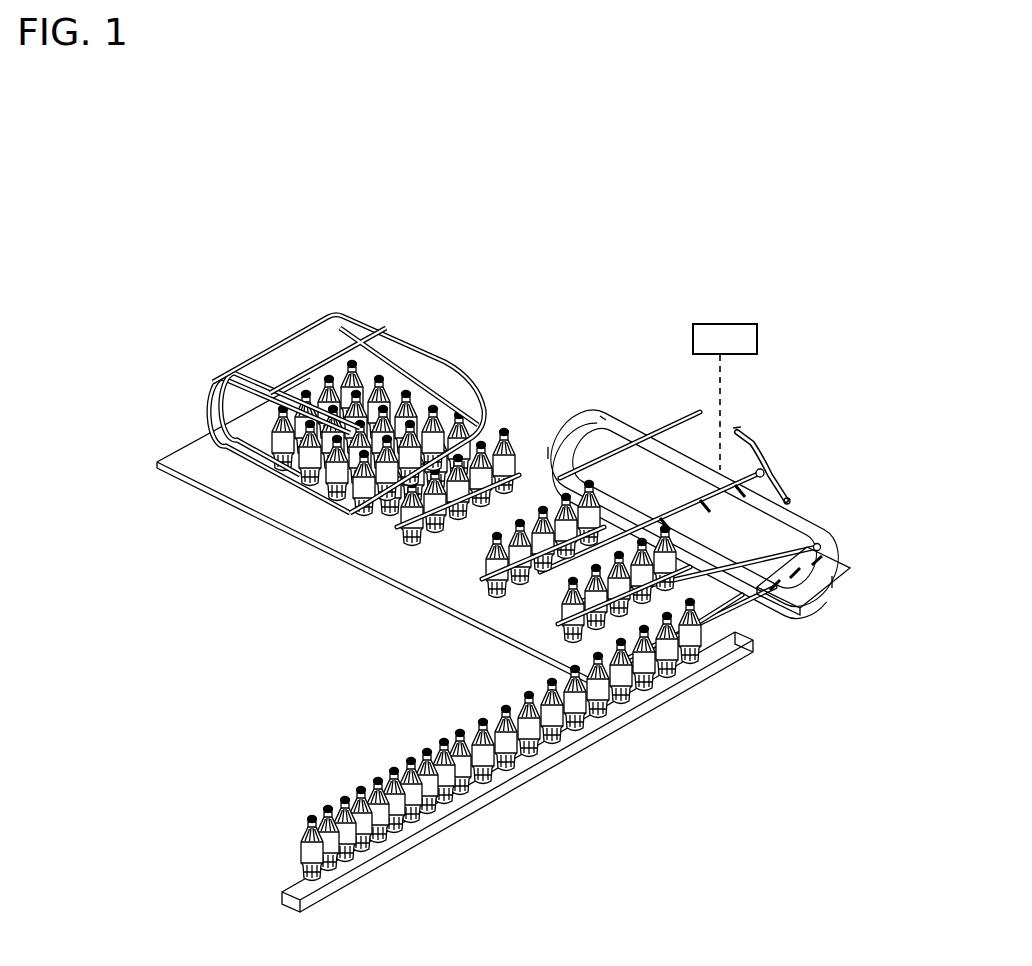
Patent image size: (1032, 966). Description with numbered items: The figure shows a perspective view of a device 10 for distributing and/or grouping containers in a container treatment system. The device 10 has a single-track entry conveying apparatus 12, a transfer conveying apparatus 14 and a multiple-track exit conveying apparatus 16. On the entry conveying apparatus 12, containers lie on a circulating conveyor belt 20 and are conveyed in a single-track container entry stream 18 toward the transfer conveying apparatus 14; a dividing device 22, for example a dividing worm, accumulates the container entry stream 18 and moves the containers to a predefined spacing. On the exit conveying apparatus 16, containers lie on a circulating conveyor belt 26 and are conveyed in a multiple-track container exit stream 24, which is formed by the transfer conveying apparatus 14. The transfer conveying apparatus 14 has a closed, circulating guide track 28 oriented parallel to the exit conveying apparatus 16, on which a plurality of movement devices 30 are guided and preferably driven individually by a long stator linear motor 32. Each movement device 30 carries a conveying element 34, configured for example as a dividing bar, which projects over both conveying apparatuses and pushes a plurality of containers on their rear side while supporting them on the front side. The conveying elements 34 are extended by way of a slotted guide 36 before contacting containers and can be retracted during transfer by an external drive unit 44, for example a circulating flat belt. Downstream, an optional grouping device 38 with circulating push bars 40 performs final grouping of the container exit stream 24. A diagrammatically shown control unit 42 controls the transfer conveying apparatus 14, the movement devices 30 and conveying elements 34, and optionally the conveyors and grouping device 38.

The device 10 is at (496, 182).
The entry conveying apparatus 12 is at (517, 780).
The transfer conveying apparatus 14 is at (699, 475).
The exit conveying apparatus 16 is at (330, 531).
The container entry stream 18 is at (282, 865).
The conveyor belt 20 is at (343, 877).
The dividing device 22 is at (383, 768).
The container exit stream 24 is at (378, 559).
The conveyor belt 26 is at (157, 465).
The guide track 28 is at (607, 441).
The movement devices 30 is at (553, 473).
The long stator linear motor 32 is at (583, 431).
The conveying element 34 is at (527, 576).
The slotted guide 36 is at (778, 483).
The grouping device 38 is at (336, 426).
The push bars 40 is at (337, 405).
The control unit 42 is at (757, 337).
The drive unit 44 is at (830, 572).